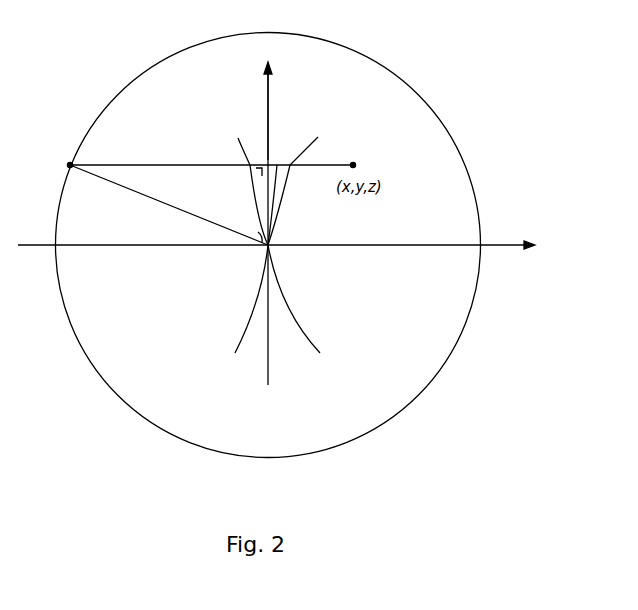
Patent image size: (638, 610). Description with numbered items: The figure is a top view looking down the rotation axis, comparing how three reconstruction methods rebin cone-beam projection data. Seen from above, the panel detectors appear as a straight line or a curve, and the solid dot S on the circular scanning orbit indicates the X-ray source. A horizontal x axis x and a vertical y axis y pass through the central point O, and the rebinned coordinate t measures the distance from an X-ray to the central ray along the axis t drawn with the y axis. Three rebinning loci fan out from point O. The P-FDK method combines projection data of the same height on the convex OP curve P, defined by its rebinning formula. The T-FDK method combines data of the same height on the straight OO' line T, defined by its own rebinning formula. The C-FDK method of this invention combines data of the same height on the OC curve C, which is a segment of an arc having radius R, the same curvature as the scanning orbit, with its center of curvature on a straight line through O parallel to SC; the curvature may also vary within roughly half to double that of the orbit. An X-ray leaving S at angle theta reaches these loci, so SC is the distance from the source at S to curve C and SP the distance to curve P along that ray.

The X-ray source S is at (204, 166).
The radius of the OC arc R is at (169, 205).
The point O is at (276, 251).
The OC curve (C-FDK rebinning curve) C is at (183, 133).
The OO' line (T-FDK rebinning line) T is at (313, 108).
The OP curve (P-FDK rebinning curve) P is at (362, 140).
The x axis x is at (276, 257).
The y axis y is at (256, 223).
The distance t from the X-ray to the central ray t is at (279, 111).